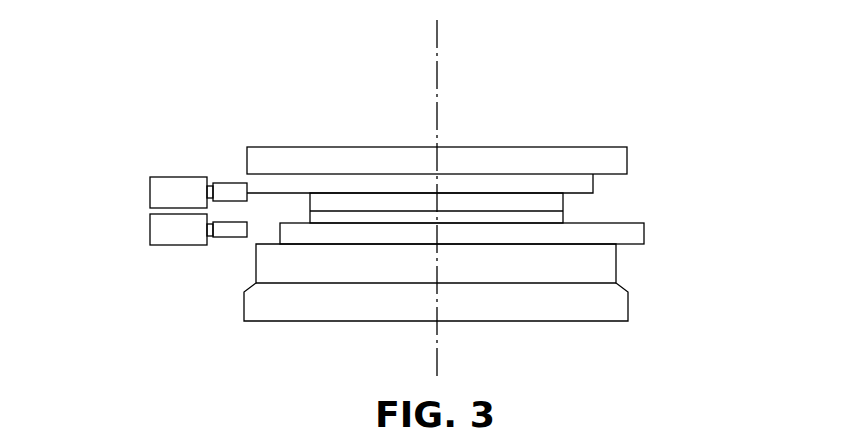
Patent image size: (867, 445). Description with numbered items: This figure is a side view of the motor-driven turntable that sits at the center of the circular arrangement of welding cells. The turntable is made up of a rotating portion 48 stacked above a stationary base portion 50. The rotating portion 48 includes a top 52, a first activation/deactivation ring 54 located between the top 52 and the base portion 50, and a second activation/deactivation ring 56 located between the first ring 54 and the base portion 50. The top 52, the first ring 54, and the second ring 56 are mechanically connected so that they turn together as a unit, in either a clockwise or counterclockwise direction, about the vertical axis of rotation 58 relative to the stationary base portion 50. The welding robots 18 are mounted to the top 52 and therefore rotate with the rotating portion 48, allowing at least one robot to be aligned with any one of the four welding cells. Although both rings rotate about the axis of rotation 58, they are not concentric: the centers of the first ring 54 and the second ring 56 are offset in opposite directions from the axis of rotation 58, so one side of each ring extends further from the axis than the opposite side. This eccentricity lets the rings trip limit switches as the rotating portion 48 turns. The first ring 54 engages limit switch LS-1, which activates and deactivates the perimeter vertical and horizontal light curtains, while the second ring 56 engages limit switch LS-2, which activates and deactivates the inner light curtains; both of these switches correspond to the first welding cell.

The welding robot 18 is at (720, 118).
The rotating portion 48 is at (619, 127).
The stationary base portion 50 is at (616, 260).
The top 52 is at (327, 147).
The first activation/deactivation ring 54 is at (593, 183).
The second activation/deactivation ring 56 is at (644, 226).
The axis of rotation 58 is at (437, 68).
The limit switch LS-1 is at (150, 190).
The limit switch LS-2 is at (150, 225).